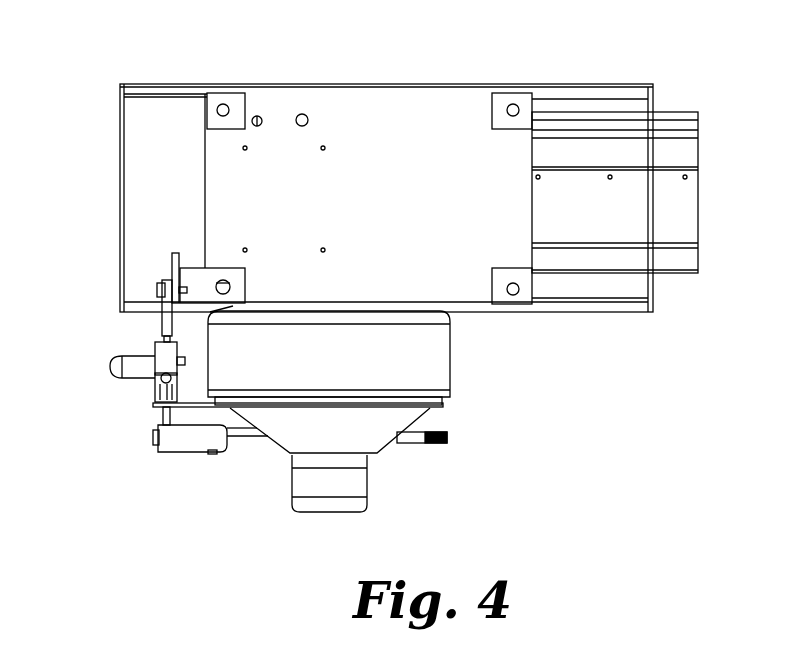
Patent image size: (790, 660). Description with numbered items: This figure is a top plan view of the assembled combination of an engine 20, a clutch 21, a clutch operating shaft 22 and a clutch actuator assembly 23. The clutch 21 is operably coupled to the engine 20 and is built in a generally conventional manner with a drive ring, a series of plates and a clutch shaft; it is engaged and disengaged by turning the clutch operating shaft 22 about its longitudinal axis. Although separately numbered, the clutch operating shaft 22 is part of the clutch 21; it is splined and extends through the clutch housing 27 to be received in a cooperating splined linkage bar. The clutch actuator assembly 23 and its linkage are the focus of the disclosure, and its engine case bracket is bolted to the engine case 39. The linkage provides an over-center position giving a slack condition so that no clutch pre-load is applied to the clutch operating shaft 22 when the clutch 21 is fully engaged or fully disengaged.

The engine 20 is at (145, 163).
The engine case 39 is at (218, 253).
The clutch actuator assembly 23 is at (147, 397).
The clutch housing 27 is at (390, 422).
The clutch 21 is at (360, 443).
The clutch operating shaft 22 is at (247, 445).